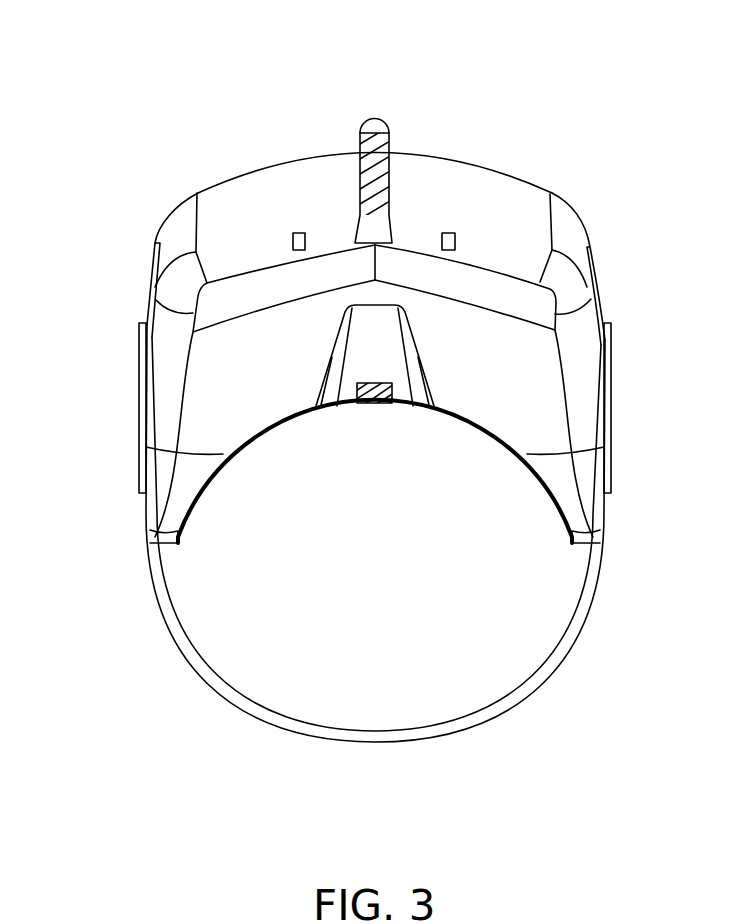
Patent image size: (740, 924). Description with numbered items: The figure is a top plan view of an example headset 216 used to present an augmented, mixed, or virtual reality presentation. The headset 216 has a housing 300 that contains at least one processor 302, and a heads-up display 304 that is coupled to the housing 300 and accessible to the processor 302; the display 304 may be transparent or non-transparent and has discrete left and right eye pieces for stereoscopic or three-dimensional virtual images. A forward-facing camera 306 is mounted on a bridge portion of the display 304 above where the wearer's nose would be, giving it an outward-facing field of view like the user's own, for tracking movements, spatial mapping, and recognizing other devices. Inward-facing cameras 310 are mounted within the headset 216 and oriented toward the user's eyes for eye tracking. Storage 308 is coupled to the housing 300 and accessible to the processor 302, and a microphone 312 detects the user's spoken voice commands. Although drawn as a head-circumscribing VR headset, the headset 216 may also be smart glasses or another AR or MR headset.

The headset 216 is at (121, 57).
The housing 300 is at (584, 607).
The processor 302 is at (261, 303).
The display 304 is at (271, 163).
The forward-facing camera 306 is at (387, 121).
The storage 308 is at (467, 297).
The inward-facing cameras 310 is at (296, 233).
The microphone 312 is at (378, 404).